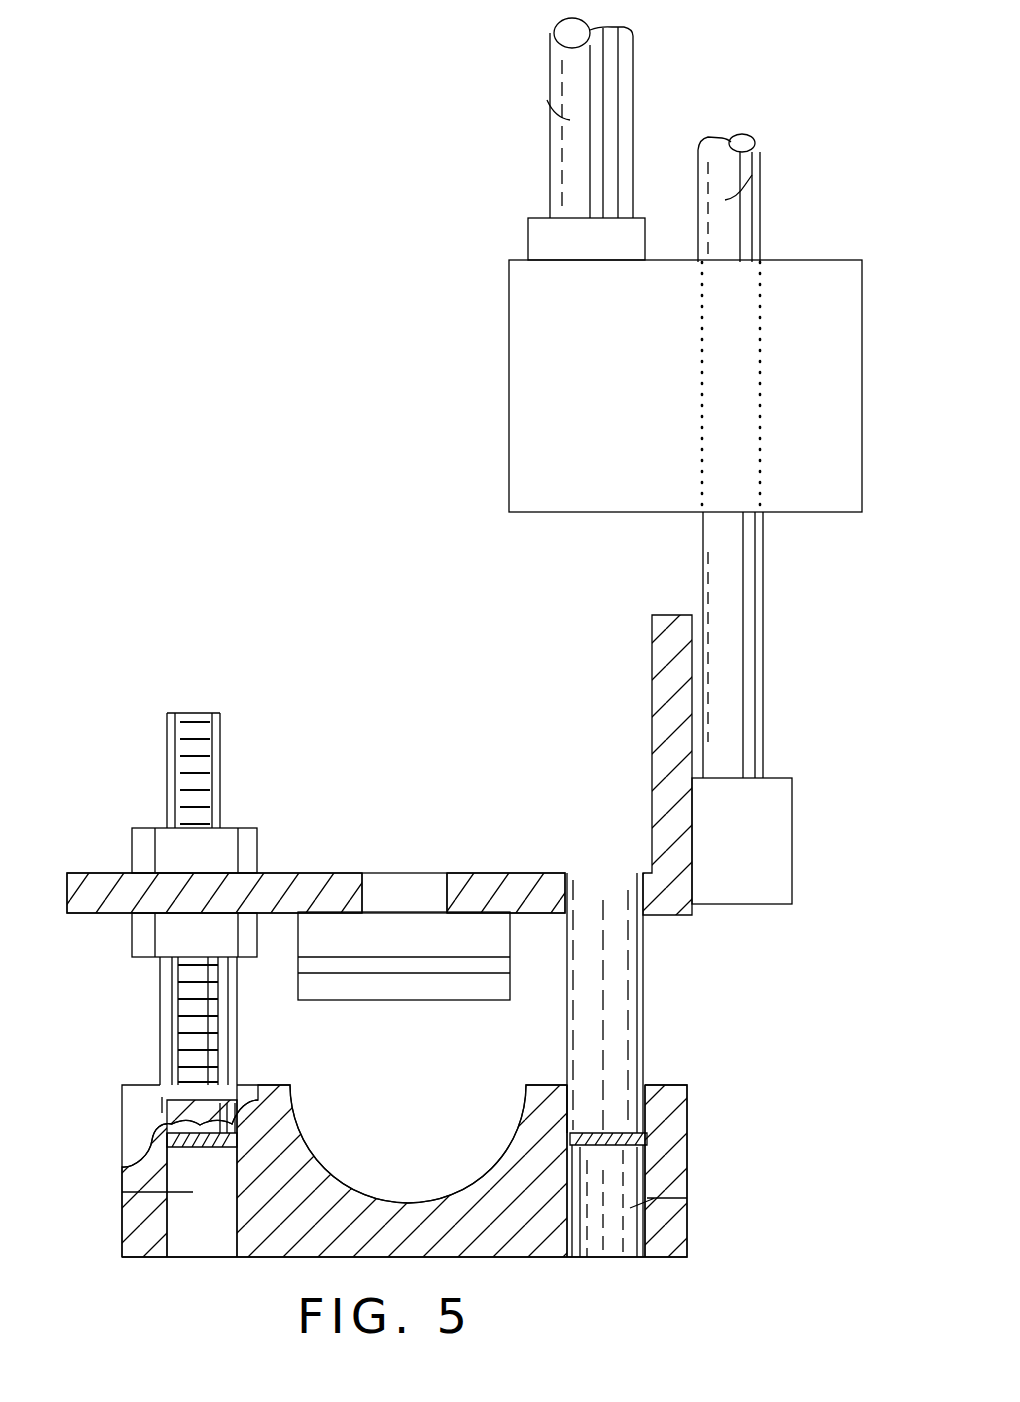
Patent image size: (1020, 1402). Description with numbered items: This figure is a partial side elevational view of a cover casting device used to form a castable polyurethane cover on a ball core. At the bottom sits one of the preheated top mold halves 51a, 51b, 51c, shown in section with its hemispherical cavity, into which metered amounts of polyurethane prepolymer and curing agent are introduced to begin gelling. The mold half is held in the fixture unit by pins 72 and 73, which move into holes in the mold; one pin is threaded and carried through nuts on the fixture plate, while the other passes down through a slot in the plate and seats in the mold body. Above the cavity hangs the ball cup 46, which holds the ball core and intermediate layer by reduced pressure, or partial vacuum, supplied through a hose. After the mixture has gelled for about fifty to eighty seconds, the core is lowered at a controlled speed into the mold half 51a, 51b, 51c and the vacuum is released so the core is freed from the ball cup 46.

The ball cup 46 is at (388, 985).
The pin 72 is at (593, 1050).
The pin 73 is at (187, 1122).
The top mold half 51a is at (475, 1171).
The top mold half 51b is at (475, 1171).
The top mold half 51c is at (670, 1147).